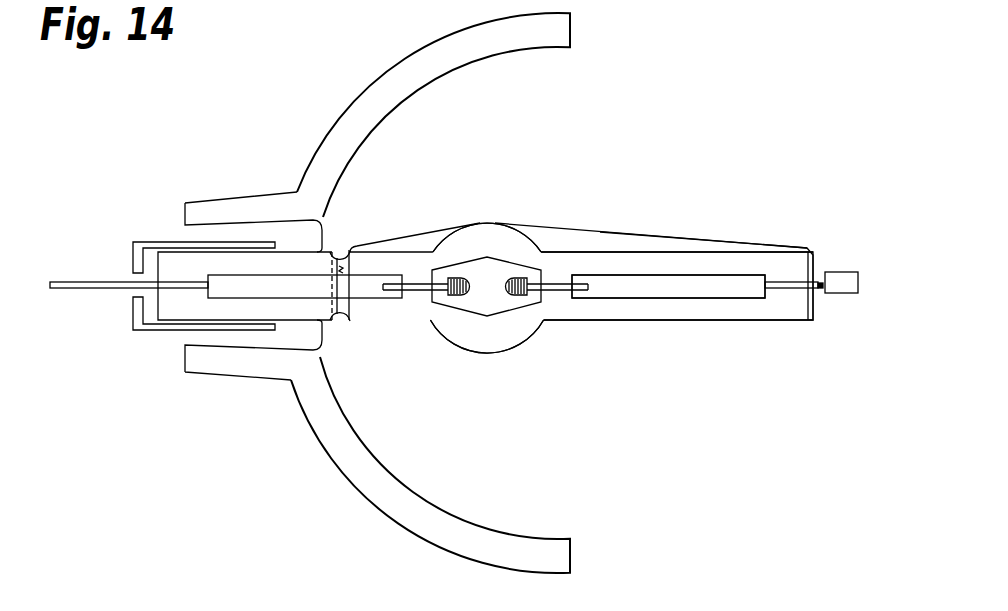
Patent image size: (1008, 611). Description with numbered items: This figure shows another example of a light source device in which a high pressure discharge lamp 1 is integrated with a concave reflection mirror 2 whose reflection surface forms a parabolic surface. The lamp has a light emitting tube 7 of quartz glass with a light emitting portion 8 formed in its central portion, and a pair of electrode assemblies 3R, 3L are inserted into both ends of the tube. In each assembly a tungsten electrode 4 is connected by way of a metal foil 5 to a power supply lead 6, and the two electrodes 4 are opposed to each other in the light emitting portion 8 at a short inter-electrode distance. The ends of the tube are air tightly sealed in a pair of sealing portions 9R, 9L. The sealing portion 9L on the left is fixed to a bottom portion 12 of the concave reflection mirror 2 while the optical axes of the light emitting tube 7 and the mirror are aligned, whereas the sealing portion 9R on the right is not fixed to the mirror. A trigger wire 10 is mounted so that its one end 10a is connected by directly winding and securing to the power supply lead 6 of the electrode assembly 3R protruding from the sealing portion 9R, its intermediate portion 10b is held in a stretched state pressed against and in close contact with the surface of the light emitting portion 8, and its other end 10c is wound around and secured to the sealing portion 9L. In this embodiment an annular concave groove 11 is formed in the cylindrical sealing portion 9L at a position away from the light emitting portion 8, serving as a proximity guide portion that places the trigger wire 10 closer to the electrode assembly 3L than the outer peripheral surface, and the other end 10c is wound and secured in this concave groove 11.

The high pressure discharge lamp 1 is at (473, 259).
The concave reflection mirror 2 is at (378, 68).
The electrode assembly 3L is at (454, 373).
The electrode assembly 3R is at (838, 442).
The tungsten electrode 4 is at (460, 297).
The metal foil 5 is at (255, 288).
The power supply lead 6 is at (300, 442).
The light emitting tube 7 is at (489, 237).
The light emitting portion 8 is at (495, 335).
The sealing portion 9L is at (187, 253).
The sealing portion 9R is at (678, 312).
The trigger wire 10 is at (560, 223).
The one end of the trigger wire 10a is at (819, 283).
The intermediate portion of the trigger wire 10b is at (642, 233).
The other end of the trigger wire 10c is at (311, 286).
The concave groove 11 is at (345, 329).
The bottom portion 12 is at (297, 222).